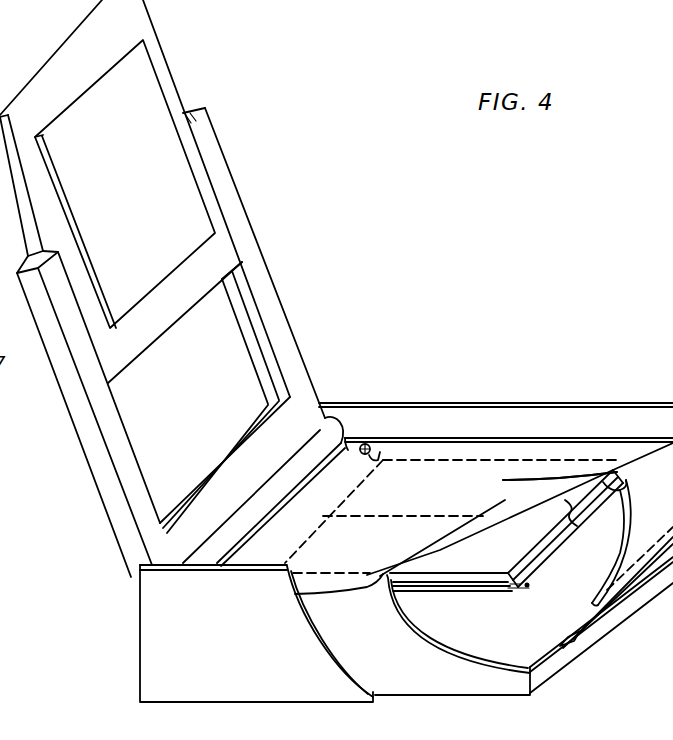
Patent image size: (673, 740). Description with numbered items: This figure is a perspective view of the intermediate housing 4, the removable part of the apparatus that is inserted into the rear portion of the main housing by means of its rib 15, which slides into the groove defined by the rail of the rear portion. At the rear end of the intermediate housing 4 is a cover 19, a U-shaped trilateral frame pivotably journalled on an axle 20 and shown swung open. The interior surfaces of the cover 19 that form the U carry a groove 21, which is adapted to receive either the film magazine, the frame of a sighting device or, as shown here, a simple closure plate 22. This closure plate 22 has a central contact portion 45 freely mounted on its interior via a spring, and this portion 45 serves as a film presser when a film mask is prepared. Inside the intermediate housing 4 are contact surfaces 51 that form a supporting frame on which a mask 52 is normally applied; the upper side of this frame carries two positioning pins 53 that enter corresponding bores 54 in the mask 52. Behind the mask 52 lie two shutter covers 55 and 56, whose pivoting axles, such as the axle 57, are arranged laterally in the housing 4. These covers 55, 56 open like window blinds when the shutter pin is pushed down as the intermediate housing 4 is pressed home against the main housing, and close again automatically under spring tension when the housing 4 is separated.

The intermediate housing 4 is at (427, 206).
The rib 15 is at (666, 542).
The cover 19 is at (213, 162).
The axle 20 is at (163, 597).
The groove 21 is at (242, 298).
The closure plate 22 is at (162, 72).
The central contact portion 45 is at (152, 128).
The contact surfaces 51 is at (350, 468).
The mask 52 is at (505, 502).
The positioning pins 53 is at (368, 446).
The bores 54 is at (376, 458).
The shutter cover 55 is at (530, 537).
The shutter cover 56 is at (573, 527).
The pivoting axle 57 is at (524, 592).